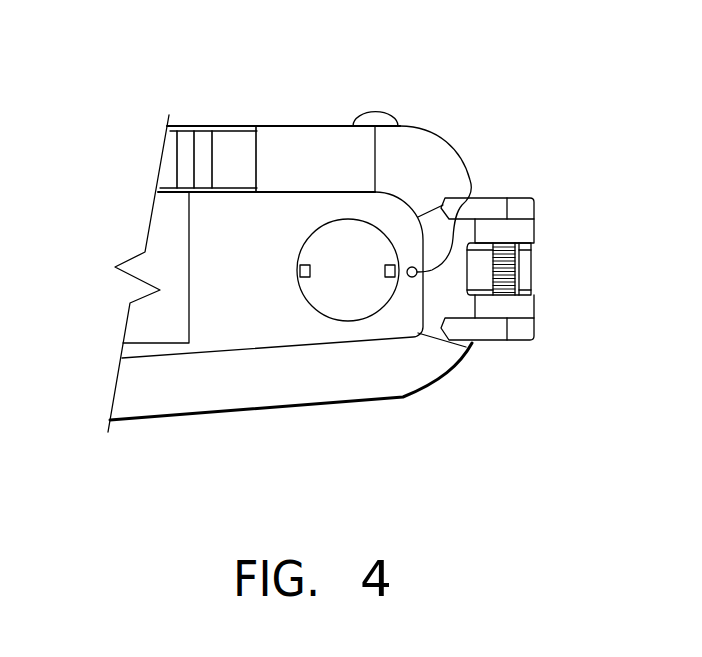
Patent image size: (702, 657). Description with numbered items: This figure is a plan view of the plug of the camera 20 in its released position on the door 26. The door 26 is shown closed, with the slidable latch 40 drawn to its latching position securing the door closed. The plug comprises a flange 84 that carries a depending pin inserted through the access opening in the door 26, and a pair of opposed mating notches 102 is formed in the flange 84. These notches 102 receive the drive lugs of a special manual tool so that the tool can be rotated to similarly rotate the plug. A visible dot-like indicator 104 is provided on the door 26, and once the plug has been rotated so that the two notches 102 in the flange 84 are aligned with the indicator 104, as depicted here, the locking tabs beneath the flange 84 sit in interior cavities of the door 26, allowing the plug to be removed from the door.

The camera 20 is at (242, 66).
The door 26 is at (233, 340).
The slidable latch 40 is at (172, 163).
The flange 84 is at (301, 264).
The mating notches 102 is at (387, 278).
The dot-like indicator 104 is at (468, 197).